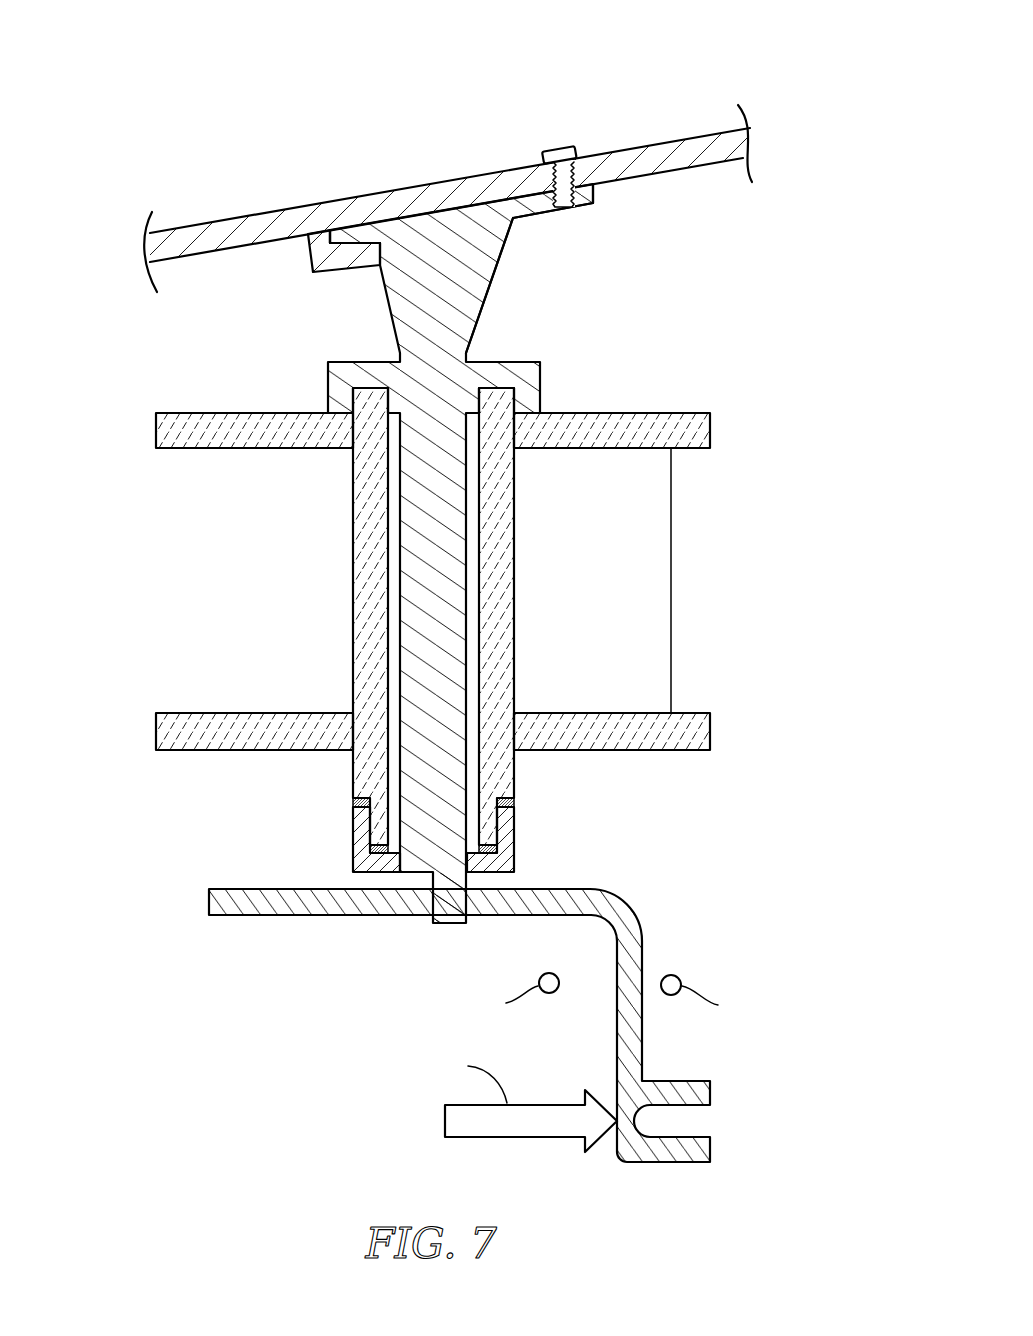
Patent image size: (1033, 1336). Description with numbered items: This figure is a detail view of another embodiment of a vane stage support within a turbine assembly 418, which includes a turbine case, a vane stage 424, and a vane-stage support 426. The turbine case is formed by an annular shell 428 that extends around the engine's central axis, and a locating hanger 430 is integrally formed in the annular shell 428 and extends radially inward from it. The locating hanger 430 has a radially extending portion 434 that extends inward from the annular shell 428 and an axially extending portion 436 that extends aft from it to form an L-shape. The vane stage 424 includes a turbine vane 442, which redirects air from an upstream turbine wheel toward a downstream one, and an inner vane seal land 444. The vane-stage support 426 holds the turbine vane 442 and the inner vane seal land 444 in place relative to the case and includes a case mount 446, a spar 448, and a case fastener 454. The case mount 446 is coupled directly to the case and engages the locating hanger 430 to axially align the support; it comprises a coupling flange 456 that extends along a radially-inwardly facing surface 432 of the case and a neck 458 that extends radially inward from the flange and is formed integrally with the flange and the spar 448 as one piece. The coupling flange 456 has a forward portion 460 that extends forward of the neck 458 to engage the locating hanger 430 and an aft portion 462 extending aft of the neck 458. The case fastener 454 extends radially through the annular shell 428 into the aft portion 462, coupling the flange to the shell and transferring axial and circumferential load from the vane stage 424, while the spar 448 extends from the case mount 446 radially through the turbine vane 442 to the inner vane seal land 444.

The turbine assembly 418 is at (435, 584).
The vane stage 424 is at (435, 681).
The vane-stage support 426 is at (421, 492).
The annular shell 428 is at (536, 207).
The locating hanger 430 is at (313, 215).
The radially-inwardly facing surface 432 is at (536, 238).
The radially extending portion 434 is at (310, 264).
The axially extending portion 436 is at (347, 270).
The turbine vane 442 is at (618, 570).
The inner vane seal land 444 is at (357, 1010).
The case mount 446 is at (536, 207).
The spar 448 is at (553, 389).
The case fastener 454 is at (546, 151).
The coupling flange 456 is at (625, 197).
The neck 458 is at (503, 301).
The forward portion 460 is at (336, 228).
The aft portion 462 is at (537, 218).